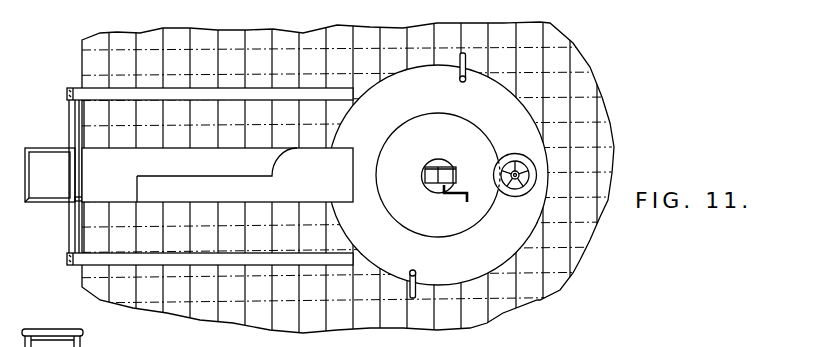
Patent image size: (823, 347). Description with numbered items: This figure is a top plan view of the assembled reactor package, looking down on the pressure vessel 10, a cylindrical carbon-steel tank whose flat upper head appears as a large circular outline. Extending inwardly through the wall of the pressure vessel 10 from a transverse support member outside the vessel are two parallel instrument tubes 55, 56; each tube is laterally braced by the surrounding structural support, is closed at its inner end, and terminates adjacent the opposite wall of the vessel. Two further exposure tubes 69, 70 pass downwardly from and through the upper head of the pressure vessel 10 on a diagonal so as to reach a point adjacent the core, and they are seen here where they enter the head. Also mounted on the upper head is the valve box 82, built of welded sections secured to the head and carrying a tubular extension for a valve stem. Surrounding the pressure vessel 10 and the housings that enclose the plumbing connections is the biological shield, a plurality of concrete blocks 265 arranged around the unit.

The pressure vessel 10 is at (533, 118).
The instrument tube 55 is at (203, 263).
The instrument tube 56 is at (203, 90).
The exposure tube 69 is at (417, 293).
The exposure tube 70 is at (467, 65).
The valve box 82 is at (540, 174).
The concrete blocks 265 is at (590, 107).